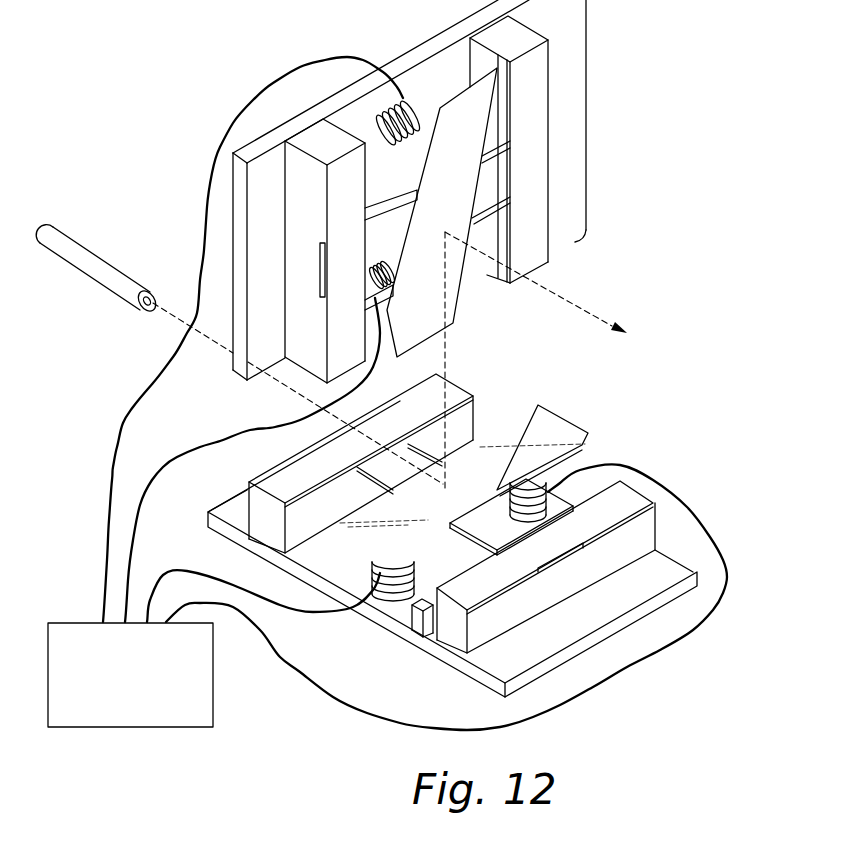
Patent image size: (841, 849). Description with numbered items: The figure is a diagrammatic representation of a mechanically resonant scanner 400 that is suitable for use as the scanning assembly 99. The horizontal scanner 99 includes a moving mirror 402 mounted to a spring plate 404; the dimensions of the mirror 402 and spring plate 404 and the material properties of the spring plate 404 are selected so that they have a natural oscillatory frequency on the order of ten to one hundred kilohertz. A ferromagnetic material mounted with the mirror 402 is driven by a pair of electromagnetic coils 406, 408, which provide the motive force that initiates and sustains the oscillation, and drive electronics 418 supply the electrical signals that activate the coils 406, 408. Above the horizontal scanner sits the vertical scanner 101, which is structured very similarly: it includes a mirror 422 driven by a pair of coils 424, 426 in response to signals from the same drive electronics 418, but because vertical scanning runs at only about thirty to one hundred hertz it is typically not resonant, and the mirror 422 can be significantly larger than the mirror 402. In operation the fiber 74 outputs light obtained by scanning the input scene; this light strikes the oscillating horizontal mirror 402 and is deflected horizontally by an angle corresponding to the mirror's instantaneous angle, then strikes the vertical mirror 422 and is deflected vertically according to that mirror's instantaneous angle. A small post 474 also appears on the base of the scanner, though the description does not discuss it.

The mechanically resonant scanner 400 is at (175, 63).
The coil 424 is at (416, 97).
The vertical scanner 101 is at (586, 78).
The coil 426 is at (367, 270).
The fiber 74 is at (103, 292).
The mirror 422 is at (450, 280).
The spring plate 404 is at (493, 517).
The electromagnetic coil 408 is at (548, 500).
The moving mirror 402 is at (368, 538).
The electromagnetic coil 406 is at (393, 590).
The stop post 474 is at (425, 622).
The drive electronics 418 is at (213, 712).
The horizontal scanner 99 is at (736, 608).